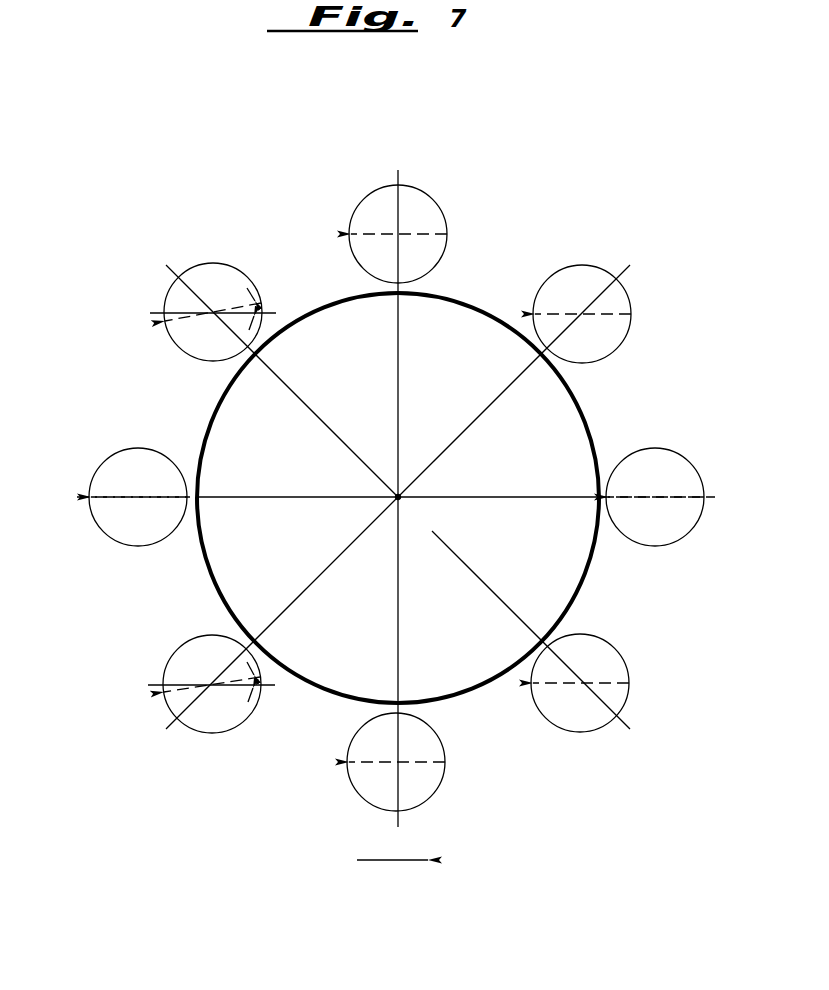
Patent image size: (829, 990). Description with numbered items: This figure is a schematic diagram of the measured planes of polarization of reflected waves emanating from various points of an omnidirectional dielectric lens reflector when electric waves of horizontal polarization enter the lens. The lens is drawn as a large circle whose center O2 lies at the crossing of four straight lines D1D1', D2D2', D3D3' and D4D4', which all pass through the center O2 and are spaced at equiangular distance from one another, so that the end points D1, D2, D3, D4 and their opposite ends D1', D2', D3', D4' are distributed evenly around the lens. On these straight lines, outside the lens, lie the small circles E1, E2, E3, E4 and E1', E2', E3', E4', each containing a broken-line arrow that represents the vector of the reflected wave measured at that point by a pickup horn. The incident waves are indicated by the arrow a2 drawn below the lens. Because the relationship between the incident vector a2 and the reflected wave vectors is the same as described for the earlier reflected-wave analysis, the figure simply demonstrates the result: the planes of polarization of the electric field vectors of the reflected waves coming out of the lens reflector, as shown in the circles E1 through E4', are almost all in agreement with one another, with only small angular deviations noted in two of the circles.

The center of the lens O2 is at (414, 517).
The end point of straight line D1D1' D1 is at (221, 502).
The end point of straight line D2D2' D2 is at (160, 256).
The end point of straight line D3D3' D3 is at (400, 159).
The end point of straight line D4D4' D4 is at (646, 274).
The end point of straight line D1D1' D1' is at (574, 495).
The end point of straight line D2D2' D2' is at (644, 738).
The end point of straight line D3D3' D3' is at (400, 840).
The end point of straight line D4D4' D4' is at (160, 742).
The circle E1 is at (144, 484).
The circle E2 is at (236, 295).
The circle E3 is at (412, 230).
The circle E4 is at (596, 297).
The circle E1' is at (665, 485).
The circle E2' is at (583, 685).
The circle E3' is at (397, 759).
The circle E4' is at (222, 677).
The incident wave vector a2 is at (414, 866).